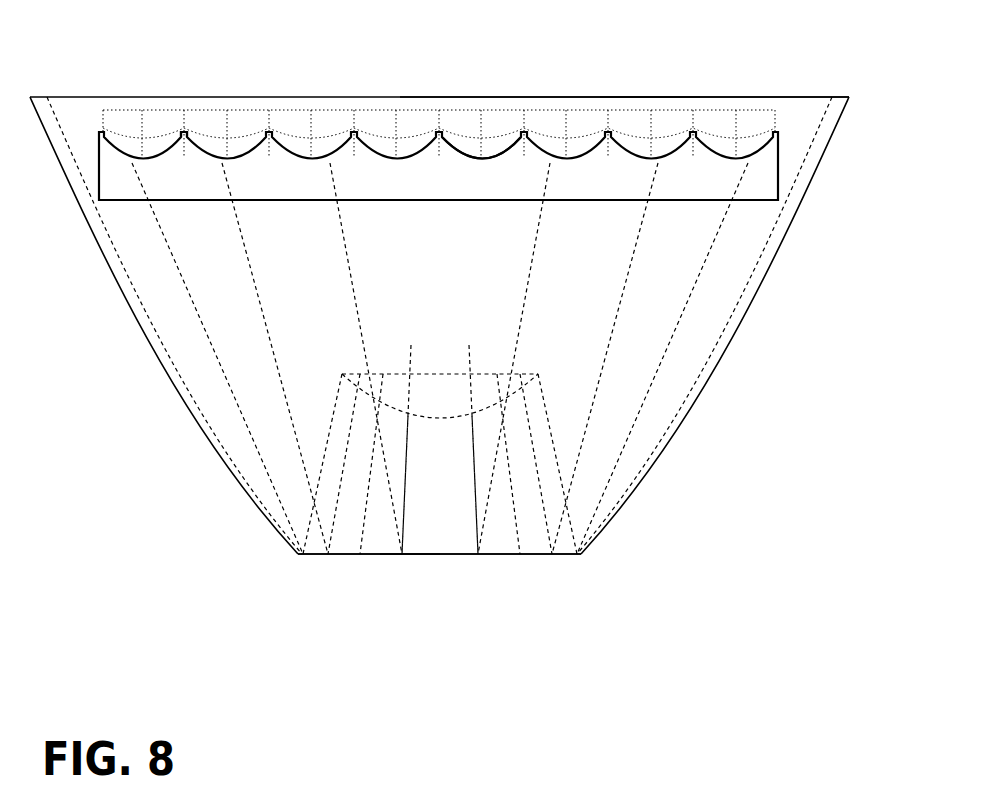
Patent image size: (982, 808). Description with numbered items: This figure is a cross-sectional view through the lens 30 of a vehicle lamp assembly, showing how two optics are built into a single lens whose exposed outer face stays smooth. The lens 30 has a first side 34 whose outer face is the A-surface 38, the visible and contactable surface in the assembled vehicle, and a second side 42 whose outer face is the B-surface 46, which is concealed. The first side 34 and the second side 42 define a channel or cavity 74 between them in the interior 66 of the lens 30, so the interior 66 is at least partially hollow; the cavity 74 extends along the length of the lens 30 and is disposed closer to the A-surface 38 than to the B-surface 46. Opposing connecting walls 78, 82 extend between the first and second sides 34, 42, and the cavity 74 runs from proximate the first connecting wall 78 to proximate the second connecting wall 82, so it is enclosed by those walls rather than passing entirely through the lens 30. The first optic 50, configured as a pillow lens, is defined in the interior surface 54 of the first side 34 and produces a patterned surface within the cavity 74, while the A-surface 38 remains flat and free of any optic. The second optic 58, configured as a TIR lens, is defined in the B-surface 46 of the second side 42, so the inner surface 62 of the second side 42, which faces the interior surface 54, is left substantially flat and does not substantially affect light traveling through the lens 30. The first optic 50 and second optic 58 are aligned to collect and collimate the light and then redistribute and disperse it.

The lens 30 is at (727, 352).
The first side 34 is at (681, 97).
The A-surface 38 is at (576, 97).
The second side 42 is at (335, 555).
The B-surface 46 is at (385, 555).
The first optic 50 is at (492, 160).
The interior surface 54 is at (182, 145).
The second optic 58 is at (447, 418).
The inner surface 62 is at (190, 194).
The interior 66 is at (732, 252).
The cavity 74 is at (762, 173).
The first connecting wall 78 is at (138, 327).
The second connecting wall 82 is at (663, 462).